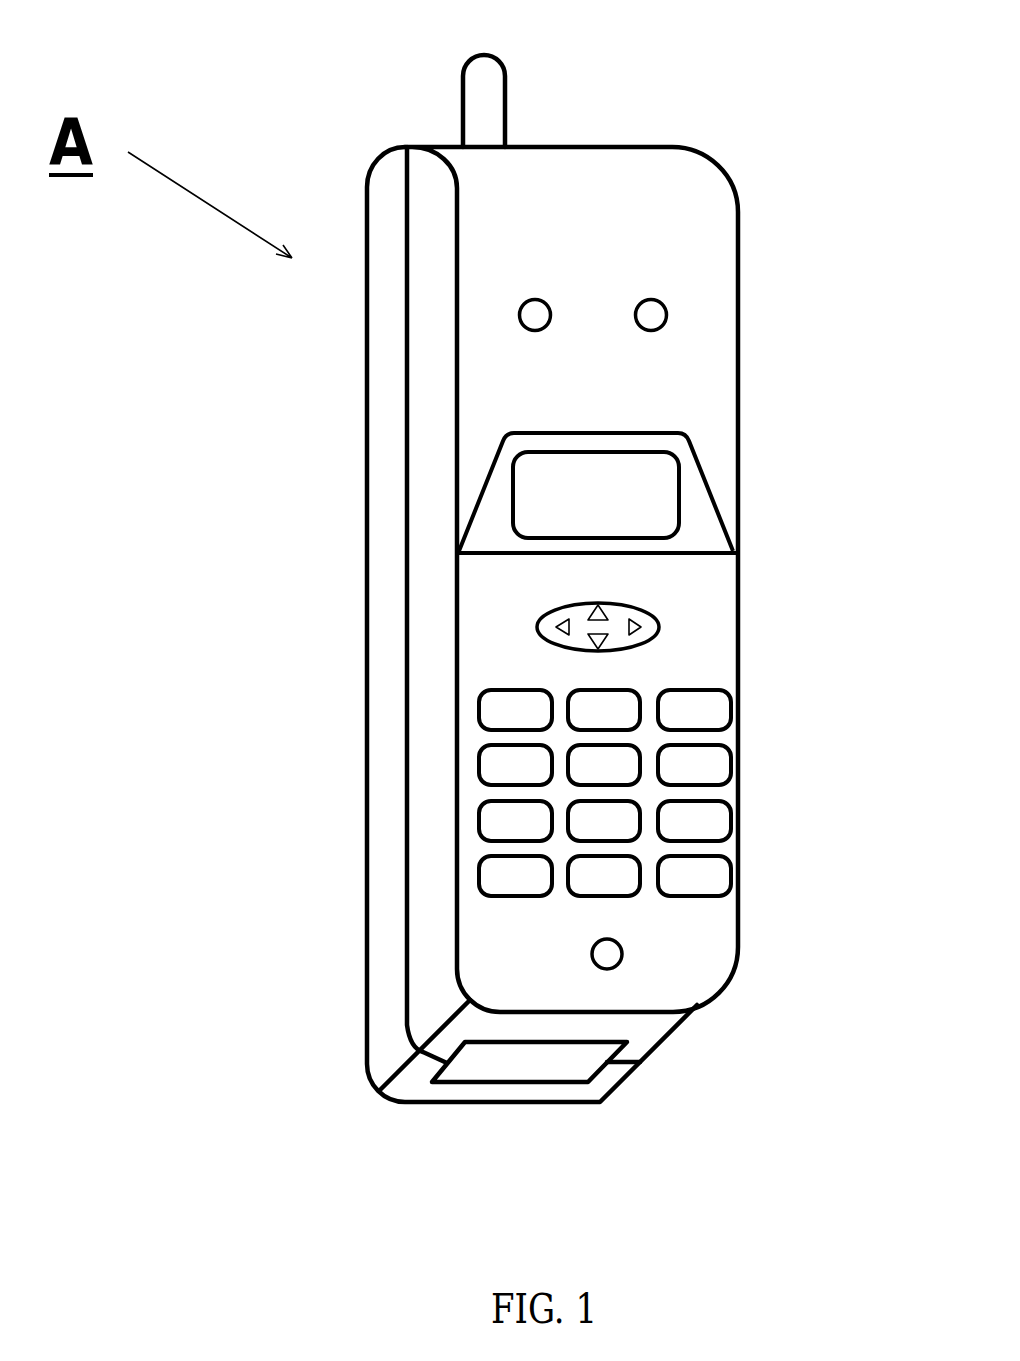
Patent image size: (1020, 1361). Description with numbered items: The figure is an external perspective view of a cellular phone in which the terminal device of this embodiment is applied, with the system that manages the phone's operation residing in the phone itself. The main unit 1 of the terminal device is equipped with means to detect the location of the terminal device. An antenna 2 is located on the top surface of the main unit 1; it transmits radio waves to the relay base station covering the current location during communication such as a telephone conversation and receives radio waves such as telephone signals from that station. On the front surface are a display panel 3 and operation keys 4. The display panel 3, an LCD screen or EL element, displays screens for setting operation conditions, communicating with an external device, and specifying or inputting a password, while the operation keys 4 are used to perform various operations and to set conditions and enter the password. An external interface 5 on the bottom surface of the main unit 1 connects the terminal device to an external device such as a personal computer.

The main unit 1 is at (738, 248).
The antenna 2 is at (488, 93).
The display panel 3 is at (586, 495).
The operation keys 4 is at (518, 770).
The external interface 5 is at (573, 1083).